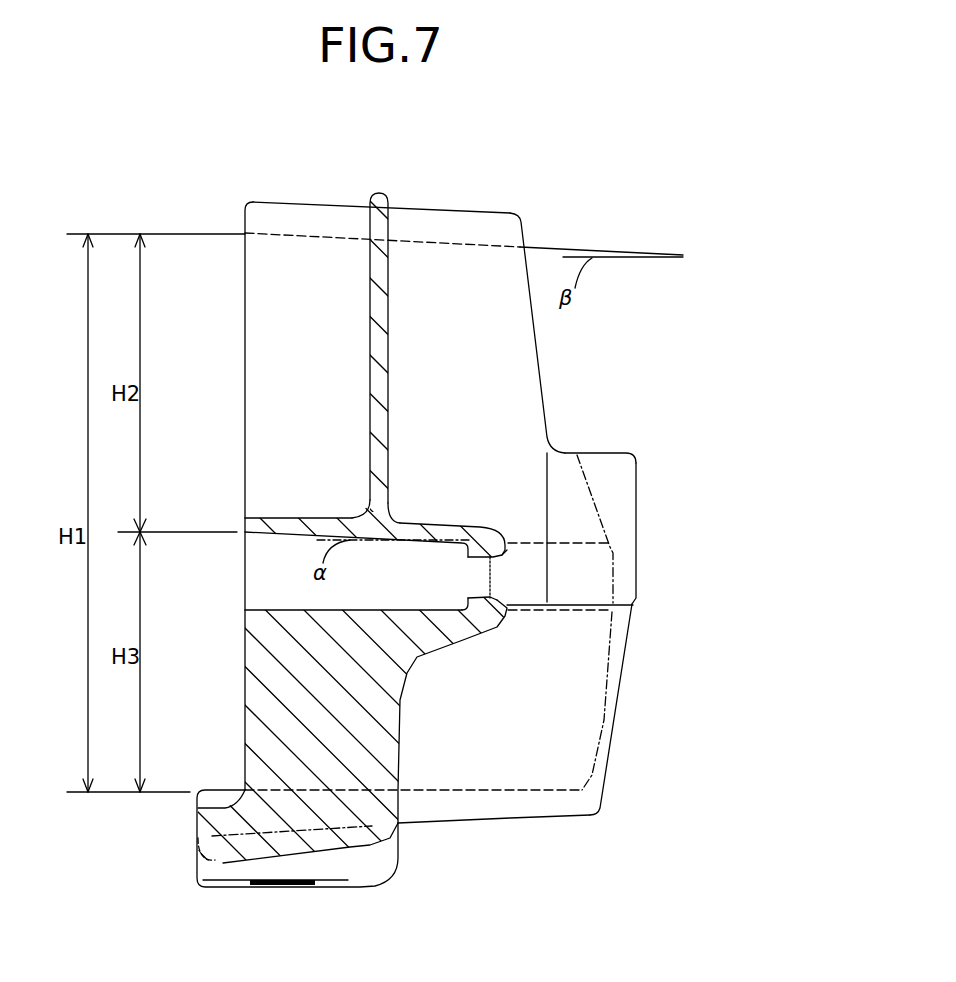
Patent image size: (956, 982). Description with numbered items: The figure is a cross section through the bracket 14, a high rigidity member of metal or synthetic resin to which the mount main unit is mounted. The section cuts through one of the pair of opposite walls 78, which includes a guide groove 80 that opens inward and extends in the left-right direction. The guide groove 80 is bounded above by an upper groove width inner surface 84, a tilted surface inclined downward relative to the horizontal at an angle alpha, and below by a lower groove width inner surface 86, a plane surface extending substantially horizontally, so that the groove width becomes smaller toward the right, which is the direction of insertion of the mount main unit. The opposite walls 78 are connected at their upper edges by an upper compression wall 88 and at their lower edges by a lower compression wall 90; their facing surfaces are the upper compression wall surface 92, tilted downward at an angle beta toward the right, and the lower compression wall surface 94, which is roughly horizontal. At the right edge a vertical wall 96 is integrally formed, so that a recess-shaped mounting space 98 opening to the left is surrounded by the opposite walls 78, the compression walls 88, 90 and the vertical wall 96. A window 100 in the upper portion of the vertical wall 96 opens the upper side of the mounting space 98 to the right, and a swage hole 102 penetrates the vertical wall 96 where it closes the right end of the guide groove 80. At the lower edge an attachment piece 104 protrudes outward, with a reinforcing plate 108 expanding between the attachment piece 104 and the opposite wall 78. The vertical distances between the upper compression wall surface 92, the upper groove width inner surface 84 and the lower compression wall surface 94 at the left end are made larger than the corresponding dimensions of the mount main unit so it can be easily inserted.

The bracket 14 is at (616, 364).
The opposite wall 78 is at (270, 367).
The guide groove 80 is at (356, 606).
The upper groove width inner surface 84 is at (317, 535).
The lower groove width inner surface 86 is at (287, 609).
The upper compression wall 88 is at (324, 220).
The lower compression wall 90 is at (455, 805).
The upper compression wall surface 92 is at (468, 246).
The lower compression wall surface 94 is at (486, 786).
The vertical wall 96 is at (617, 508).
The mounting space 98 is at (568, 731).
The window 100 is at (630, 452).
The swage hole 102 is at (500, 596).
The attachment piece 104 is at (240, 884).
The reinforcing plate 108 is at (380, 400).